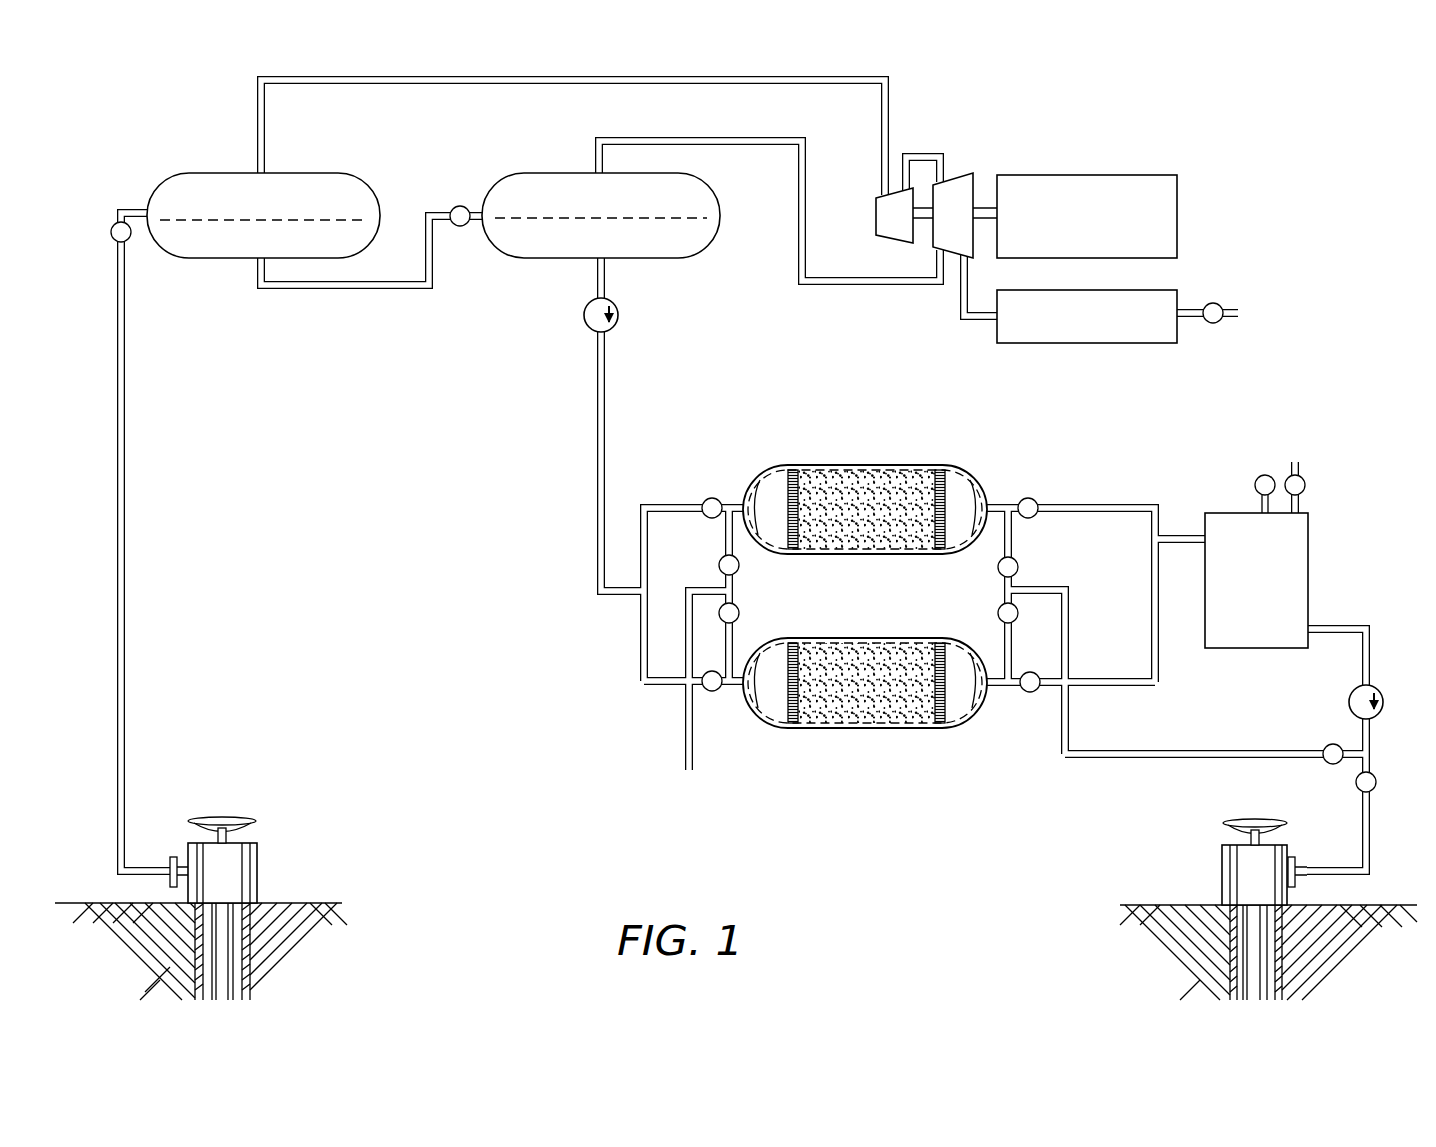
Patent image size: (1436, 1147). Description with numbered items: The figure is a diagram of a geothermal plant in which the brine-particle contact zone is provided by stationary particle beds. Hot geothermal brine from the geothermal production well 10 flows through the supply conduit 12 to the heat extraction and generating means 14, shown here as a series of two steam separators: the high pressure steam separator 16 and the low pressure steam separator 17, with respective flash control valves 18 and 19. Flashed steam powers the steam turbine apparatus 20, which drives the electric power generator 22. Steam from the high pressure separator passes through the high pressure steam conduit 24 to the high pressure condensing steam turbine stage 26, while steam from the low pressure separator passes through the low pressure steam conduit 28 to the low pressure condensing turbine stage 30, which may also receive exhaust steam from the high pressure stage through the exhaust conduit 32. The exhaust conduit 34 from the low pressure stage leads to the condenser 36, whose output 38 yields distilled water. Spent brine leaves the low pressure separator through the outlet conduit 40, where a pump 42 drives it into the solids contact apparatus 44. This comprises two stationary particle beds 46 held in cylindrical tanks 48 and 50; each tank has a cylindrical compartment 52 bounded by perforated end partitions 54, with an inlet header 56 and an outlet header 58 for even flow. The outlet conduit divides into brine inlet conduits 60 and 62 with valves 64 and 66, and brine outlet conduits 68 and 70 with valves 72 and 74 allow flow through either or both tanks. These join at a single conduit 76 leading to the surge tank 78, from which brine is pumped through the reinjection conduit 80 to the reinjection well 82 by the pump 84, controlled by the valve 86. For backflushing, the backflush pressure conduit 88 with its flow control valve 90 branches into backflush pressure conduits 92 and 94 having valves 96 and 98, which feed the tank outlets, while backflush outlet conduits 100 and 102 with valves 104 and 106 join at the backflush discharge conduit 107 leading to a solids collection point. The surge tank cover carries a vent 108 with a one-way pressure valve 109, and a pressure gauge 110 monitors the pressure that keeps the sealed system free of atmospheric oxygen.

The geothermal production well 10 is at (265, 874).
The supply conduit 12 is at (126, 470).
The heat extraction and generating means 14 is at (516, 326).
The high pressure steam separator 16 is at (207, 260).
The low pressure steam separator 17 is at (528, 260).
The flash control valve 18 is at (110, 232).
The flash control valve 19 is at (458, 205).
The steam turbine apparatus 20 is at (968, 137).
The electric power generator 22 is at (1097, 175).
The high pressure steam conduit 24 is at (378, 84).
The high pressure condensing steam turbine stage 26 is at (875, 222).
The low pressure steam conduit 28 is at (727, 146).
The low pressure condensing turbine stage 30 is at (960, 175).
The exhaust conduit 32 is at (923, 153).
The exhaust conduit 34 is at (960, 313).
The condenser 36 is at (1055, 344).
The output 38 is at (1228, 320).
The outlet conduit 40 is at (605, 373).
The pump 42 is at (620, 316).
The solids contact apparatus 44 is at (962, 752).
The stationary particle bed 46 is at (880, 514).
The particle bed tank 48 is at (905, 465).
The particle bed tank 50 is at (900, 638).
The cylindrical compartment 52 is at (853, 485).
The perforated end partition 54 is at (784, 468).
The inlet header 56 is at (740, 458).
The outlet header 58 is at (983, 482).
The brine inlet conduit 60 is at (660, 503).
The brine inlet conduit 62 is at (655, 688).
The valve 64 is at (708, 497).
The valve 66 is at (712, 692).
The brine outlet conduit 68 is at (1120, 504).
The brine outlet conduit 70 is at (1112, 680).
The valve 72 is at (1034, 499).
The valve 74 is at (1030, 693).
The single conduit 76 is at (1183, 533).
The surge tank 78 is at (1310, 548).
The reinjection conduit 80 is at (1360, 668).
The reinjection well 82 is at (1210, 888).
The pump 84 is at (1348, 701).
The valve 86 is at (1355, 788).
The backflush pressure conduit 88 is at (1210, 749).
The flow control valve 90 is at (1325, 763).
The backflush pressure conduit 92 is at (1015, 532).
The backflush pressure conduit 94 is at (1012, 642).
The valve 96 is at (1019, 566).
The valve 98 is at (1019, 612).
The backflush outlet conduit 100 is at (724, 542).
The backflush outlet conduit 102 is at (733, 648).
The valve 104 is at (740, 566).
The valve 106 is at (740, 613).
The backflush discharge conduit 107 is at (685, 763).
The vent 108 is at (1305, 497).
The one-way pressure valve 109 is at (1306, 483).
The pressure gauge 110 is at (1260, 476).